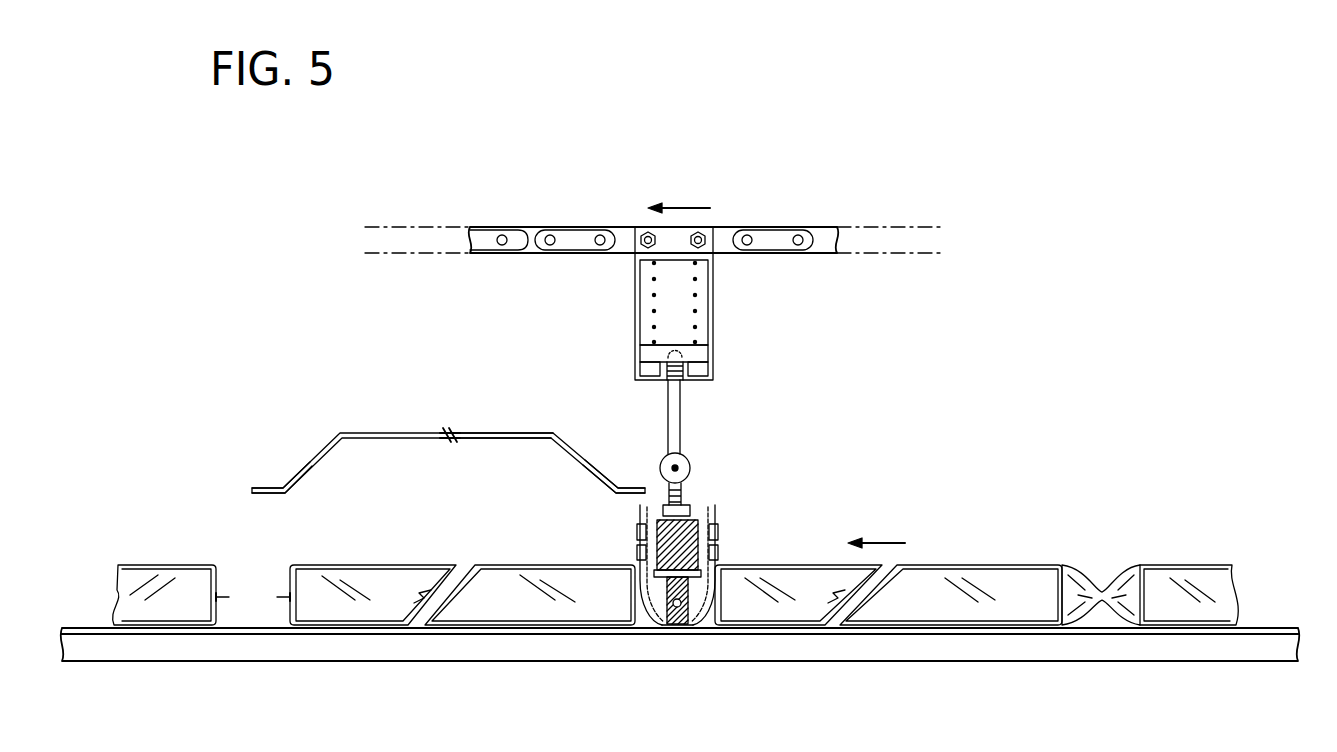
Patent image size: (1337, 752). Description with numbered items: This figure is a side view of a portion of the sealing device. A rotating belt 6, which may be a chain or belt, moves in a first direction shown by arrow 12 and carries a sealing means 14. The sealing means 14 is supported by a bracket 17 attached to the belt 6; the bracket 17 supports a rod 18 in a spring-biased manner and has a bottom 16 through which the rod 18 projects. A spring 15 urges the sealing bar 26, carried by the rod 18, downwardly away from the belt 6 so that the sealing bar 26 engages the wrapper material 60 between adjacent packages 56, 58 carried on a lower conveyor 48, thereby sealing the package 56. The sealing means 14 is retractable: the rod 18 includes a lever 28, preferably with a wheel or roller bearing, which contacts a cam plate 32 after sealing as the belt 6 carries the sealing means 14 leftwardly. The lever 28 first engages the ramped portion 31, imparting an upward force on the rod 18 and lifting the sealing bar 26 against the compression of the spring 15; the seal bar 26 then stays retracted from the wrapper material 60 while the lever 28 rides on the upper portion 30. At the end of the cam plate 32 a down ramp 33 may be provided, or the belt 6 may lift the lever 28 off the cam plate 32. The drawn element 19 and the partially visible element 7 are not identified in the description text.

The rotating belt 6 is at (804, 228).
The arrow 12 is at (677, 197).
The sealing means 14 is at (742, 503).
The spring 15 is at (652, 311).
The bottom 16 is at (688, 364).
The bracket 17 is at (708, 313).
The rod 18 is at (680, 413).
The plate 19 is at (698, 352).
The sealing bar 26 is at (668, 625).
The lever 28 is at (690, 462).
The upper portion 30 is at (494, 438).
The ramped portion 31 is at (594, 470).
The cam plate 32 is at (380, 433).
The down ramp 33 is at (310, 467).
The lower conveyor 48 is at (1105, 633).
The package 56 is at (451, 612).
The package 58 is at (940, 609).
The wrapper material 60 is at (651, 625).
The support rail 7 is at (1255, 645).